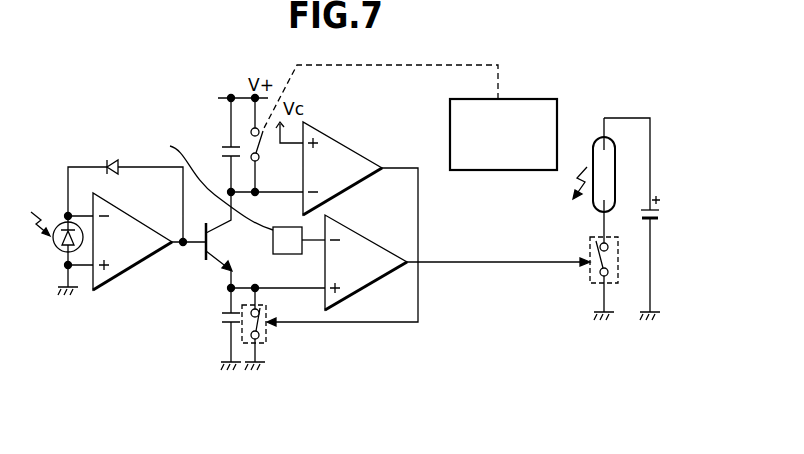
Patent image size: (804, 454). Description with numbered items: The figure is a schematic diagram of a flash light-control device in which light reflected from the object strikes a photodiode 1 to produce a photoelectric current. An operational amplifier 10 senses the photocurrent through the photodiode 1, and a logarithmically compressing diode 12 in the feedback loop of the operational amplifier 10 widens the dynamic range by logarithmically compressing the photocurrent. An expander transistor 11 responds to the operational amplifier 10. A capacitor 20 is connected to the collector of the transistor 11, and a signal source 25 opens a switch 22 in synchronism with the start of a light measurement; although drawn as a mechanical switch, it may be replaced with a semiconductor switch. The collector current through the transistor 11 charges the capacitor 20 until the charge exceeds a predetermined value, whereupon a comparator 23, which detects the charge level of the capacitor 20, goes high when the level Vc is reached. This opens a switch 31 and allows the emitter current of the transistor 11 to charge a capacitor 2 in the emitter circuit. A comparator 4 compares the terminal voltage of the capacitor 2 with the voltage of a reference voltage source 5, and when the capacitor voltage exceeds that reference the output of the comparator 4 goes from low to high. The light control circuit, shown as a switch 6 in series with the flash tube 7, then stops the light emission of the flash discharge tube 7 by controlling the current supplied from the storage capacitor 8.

The photodiode 1 is at (58, 229).
The logarithmically compressing diode 12 is at (113, 175).
The operational amplifier 10 is at (141, 222).
The capacitor 20 is at (222, 150).
The switch 22 is at (260, 145).
The comparator 23 is at (348, 148).
The signal source 25 is at (528, 99).
The transistor 11 is at (212, 246).
The reference voltage source 5 is at (273, 241).
The comparator 4 is at (374, 242).
The capacitor 2 is at (222, 318).
The switch 31 is at (266, 338).
The switch 6 is at (588, 245).
The flash tube 7 is at (595, 148).
The storage capacitor 8 is at (658, 217).